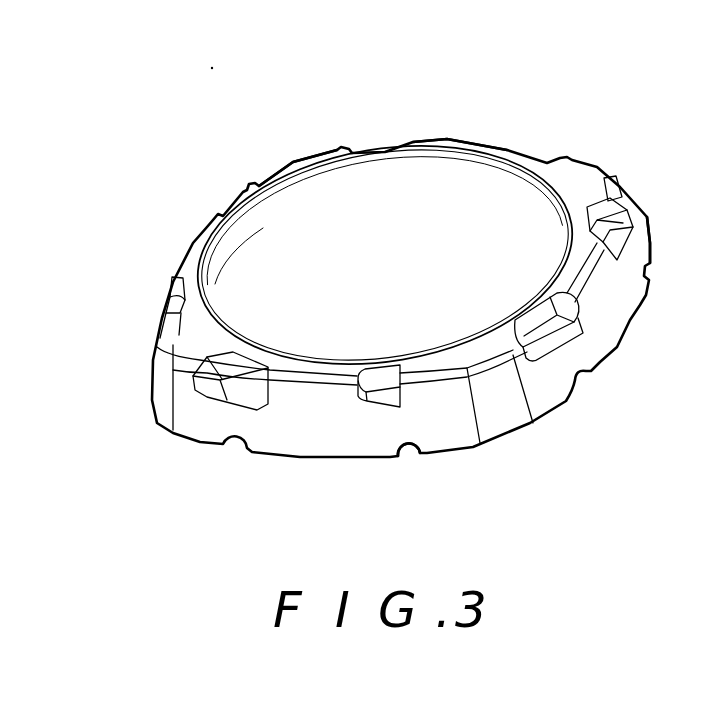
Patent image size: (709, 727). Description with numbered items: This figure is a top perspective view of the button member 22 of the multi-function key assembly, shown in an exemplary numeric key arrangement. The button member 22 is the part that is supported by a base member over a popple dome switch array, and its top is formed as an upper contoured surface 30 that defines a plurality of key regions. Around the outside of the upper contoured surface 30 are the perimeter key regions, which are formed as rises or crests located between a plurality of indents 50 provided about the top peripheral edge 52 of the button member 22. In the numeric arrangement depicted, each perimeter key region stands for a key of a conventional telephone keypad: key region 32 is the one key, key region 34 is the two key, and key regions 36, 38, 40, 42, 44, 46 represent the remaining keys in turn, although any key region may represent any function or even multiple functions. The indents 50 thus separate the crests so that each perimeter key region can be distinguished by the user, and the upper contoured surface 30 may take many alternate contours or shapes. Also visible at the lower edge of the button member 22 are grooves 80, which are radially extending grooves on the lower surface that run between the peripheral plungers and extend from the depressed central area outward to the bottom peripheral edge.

The button member 22 is at (370, 91).
The upper contoured surface 30 is at (510, 185).
The key region 32 is at (295, 165).
The key region 34 is at (457, 143).
The key region 36 is at (595, 187).
The key region 38 is at (197, 255).
The key region 40 is at (567, 273).
The key region 42 is at (180, 335).
The key region 44 is at (330, 365).
The key region 46 is at (443, 353).
The indent 50 is at (248, 385).
The top peripheral edge 52 is at (513, 343).
The radially extending groove 80 is at (405, 450).